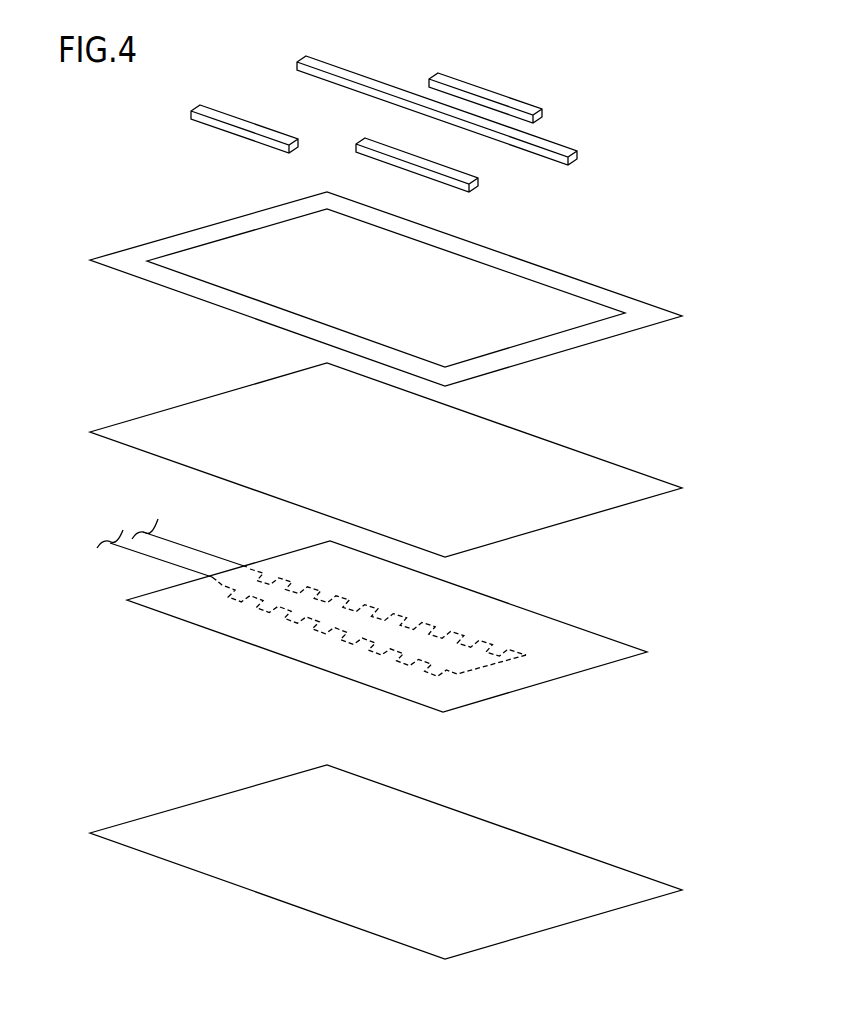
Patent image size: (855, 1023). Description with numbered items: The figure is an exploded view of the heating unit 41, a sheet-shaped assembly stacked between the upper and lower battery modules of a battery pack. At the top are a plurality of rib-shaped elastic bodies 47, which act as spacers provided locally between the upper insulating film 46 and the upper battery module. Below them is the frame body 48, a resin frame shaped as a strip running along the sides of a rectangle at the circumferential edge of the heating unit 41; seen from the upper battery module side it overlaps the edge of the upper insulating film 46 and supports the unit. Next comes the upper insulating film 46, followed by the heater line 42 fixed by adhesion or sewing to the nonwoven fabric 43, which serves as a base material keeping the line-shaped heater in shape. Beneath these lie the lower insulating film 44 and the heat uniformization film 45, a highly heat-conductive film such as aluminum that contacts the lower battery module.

The heating unit 41 is at (118, 221).
The elastic body 47 is at (693, 93).
The frame body 48 is at (693, 240).
The upper insulating film 46 is at (693, 412).
The heater line 42 is at (426, 616).
The nonwoven fabric 43 is at (693, 580).
The lower insulating film 44 is at (422, 868).
The heat uniformization film 45 is at (693, 813).